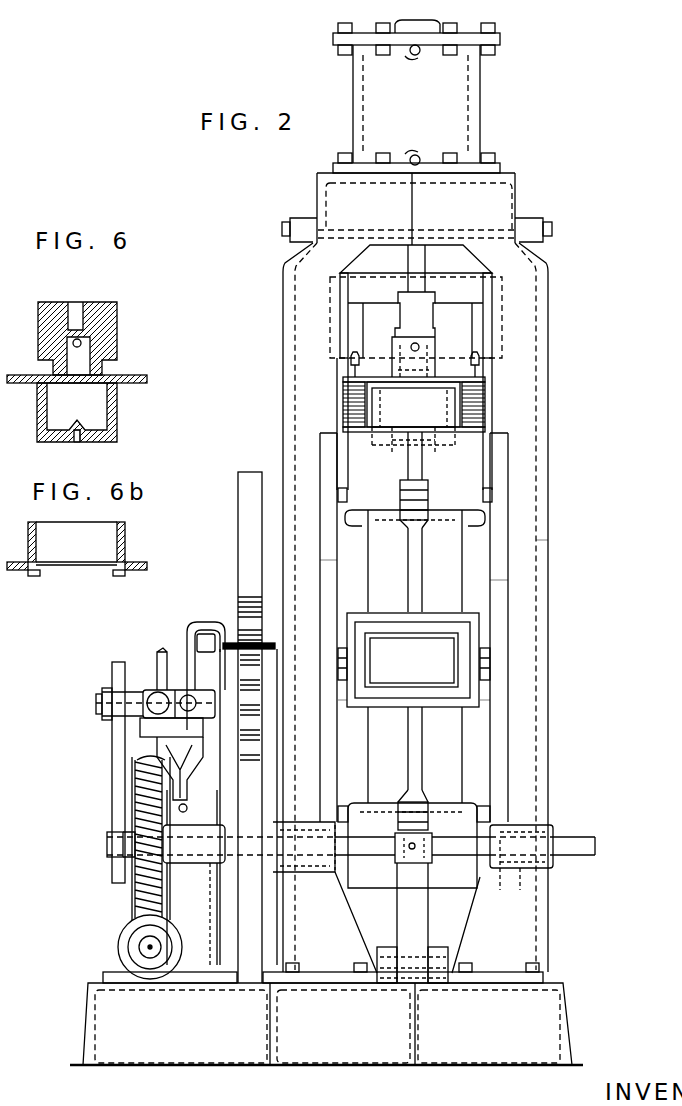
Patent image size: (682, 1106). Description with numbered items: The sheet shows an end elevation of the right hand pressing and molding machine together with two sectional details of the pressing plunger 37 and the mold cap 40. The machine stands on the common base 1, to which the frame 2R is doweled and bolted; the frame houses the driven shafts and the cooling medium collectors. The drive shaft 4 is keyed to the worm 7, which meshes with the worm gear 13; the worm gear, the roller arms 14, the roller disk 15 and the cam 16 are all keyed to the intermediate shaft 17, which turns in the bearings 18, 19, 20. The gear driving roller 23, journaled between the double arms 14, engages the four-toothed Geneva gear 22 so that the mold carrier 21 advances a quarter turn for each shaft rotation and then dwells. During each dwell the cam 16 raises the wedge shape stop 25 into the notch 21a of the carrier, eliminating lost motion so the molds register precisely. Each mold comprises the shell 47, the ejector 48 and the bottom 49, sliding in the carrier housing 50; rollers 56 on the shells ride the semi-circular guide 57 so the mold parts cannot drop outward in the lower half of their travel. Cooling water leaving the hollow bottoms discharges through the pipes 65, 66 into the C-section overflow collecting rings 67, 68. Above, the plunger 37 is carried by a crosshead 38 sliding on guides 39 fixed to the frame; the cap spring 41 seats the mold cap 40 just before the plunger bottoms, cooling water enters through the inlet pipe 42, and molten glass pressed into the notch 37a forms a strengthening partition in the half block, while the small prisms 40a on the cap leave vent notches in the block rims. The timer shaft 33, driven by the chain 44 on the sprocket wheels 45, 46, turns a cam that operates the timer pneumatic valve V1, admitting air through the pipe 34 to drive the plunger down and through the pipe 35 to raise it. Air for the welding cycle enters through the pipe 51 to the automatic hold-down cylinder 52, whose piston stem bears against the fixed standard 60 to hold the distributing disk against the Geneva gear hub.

In FIG. 2, the common base 1 is at (548, 1010).
In FIG. 2, the frame 2R is at (527, 547).
In FIG. 2, the drive shaft 4 is at (148, 949).
In FIG. 2, the worm 7 is at (118, 963).
In FIG. 2, the worm gear 13 is at (135, 897).
In FIG. 2, the roller arm 14 is at (232, 734).
In FIG. 2, the roller disk 15 is at (255, 986).
In FIG. 2, the cam 16 is at (418, 855).
In FIG. 2, the intermediate shaft 17 is at (585, 857).
In FIG. 2, the bearing 18 is at (185, 846).
In FIG. 2, the bearing 19 is at (298, 868).
In FIG. 2, the bearing 20 is at (524, 878).
In FIG. 2, the mold carrier 21 is at (443, 765).
In FIG. 2, the notch 21a is at (428, 503).
In FIG. 2, the Geneva gear 22 is at (250, 556).
In FIG. 2, the gear driving roller 23 is at (262, 645).
In FIG. 2, the wedge shape stop 25 is at (405, 901).
In FIG. 2, the timer shaft 33 is at (102, 710).
In FIG. 2, the pipe 34 is at (420, 56).
In FIG. 2, the pipe 35 is at (418, 155).
In FIG. 2, the pressing plunger 37 is at (432, 442).
In FIG. 6, the pressing plunger 37 is at (118, 408).
In FIG. 6, the notch 37a is at (78, 435).
In FIG. 2, the crosshead 38 is at (444, 305).
In FIG. 6, the crosshead 38 is at (110, 308).
In FIG. 2, the guide 39 is at (348, 302).
In FIG. 2, the mold cap 40 is at (392, 428).
In FIG. 6b, the mold cap 40 is at (125, 548).
In FIG. 6b, the prism 40a is at (35, 577).
In FIG. 2, the cap spring 41 is at (343, 403).
In FIG. 2, the inlet pipe 42 is at (420, 347).
In FIG. 6, the inlet pipe 42 is at (82, 344).
In FIG. 2, the chain 44 is at (120, 760).
In FIG. 2, the sprocket wheel 45 is at (110, 836).
In FIG. 2, the sprocket wheel 46 is at (106, 698).
In FIG. 2, the shell 47 is at (425, 627).
In FIG. 2, the ejector 48 is at (380, 645).
In FIG. 2, the bottom 49 is at (398, 675).
In FIG. 2, the carrier housing 50 is at (364, 515).
In FIG. 2, the pipe 51 is at (200, 626).
In FIG. 2, the automatic hold-down cylinder 52 is at (212, 640).
In FIG. 2, the roller 56 is at (338, 506).
In FIG. 2, the semi-circular guide 57 is at (488, 716).
In FIG. 2, the fixed standard 60 is at (140, 731).
In FIG. 2, the pipe 65 is at (492, 462).
In FIG. 2, the pipe 66 is at (337, 460).
In FIG. 2, the overflow collecting ring 67 is at (324, 570).
In FIG. 2, the overflow collecting ring 68 is at (503, 585).
In FIG. 2, the timer pneumatic valve V1 is at (156, 696).